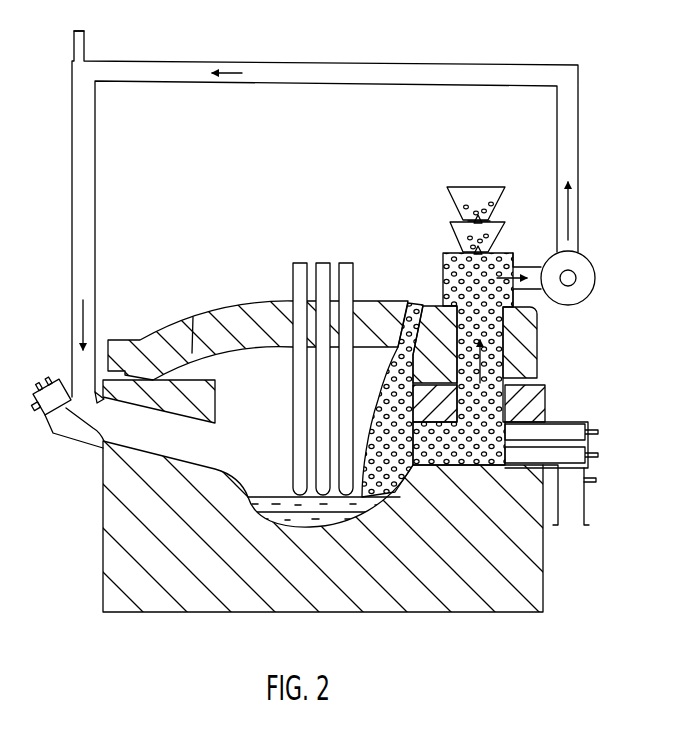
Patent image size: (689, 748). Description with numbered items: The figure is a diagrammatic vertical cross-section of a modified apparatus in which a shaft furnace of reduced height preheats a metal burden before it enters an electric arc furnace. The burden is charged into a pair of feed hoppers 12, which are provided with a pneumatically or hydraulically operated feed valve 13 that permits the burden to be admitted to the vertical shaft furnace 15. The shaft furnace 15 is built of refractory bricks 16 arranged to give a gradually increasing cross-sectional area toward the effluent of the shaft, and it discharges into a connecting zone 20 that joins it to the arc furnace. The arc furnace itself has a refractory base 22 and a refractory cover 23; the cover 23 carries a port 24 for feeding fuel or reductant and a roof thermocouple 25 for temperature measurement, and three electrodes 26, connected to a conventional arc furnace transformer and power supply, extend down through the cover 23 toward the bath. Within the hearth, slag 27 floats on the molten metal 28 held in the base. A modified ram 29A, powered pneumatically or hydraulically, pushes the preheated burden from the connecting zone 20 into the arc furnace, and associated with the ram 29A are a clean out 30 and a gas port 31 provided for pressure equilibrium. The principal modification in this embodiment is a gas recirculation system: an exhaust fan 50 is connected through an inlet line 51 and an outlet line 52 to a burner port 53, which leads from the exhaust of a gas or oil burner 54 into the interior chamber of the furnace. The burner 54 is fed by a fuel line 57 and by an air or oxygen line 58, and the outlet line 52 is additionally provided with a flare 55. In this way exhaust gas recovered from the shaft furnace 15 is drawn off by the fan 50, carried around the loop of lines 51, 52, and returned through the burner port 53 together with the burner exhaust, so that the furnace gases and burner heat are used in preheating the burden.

The feed hoppers 12 is at (497, 246).
The feed valve 13 is at (468, 219).
The vertical shaft furnace 15 is at (520, 387).
The refractory bricks 16 is at (520, 346).
The connecting zone 20 is at (406, 444).
The refractory base 22 is at (383, 605).
The refractory cover 23 is at (234, 312).
The port 24 is at (418, 306).
The roof thermocouple 25 is at (192, 318).
The electrodes 26 is at (344, 275).
The slag 27 is at (270, 500).
The molten bath 28 is at (272, 518).
The ram 29A is at (584, 414).
The clean out 30 is at (568, 525).
The gas port 31 is at (605, 481).
The exhaust fan 50 is at (562, 305).
The inlet line 51 is at (526, 270).
The outlet line 52 is at (457, 86).
The burner port 53 is at (113, 436).
The gas or oil burner 54 is at (50, 414).
The flare 55 is at (80, 34).
The fuel line 57 is at (50, 380).
The air or oxygen line 58 is at (59, 382).